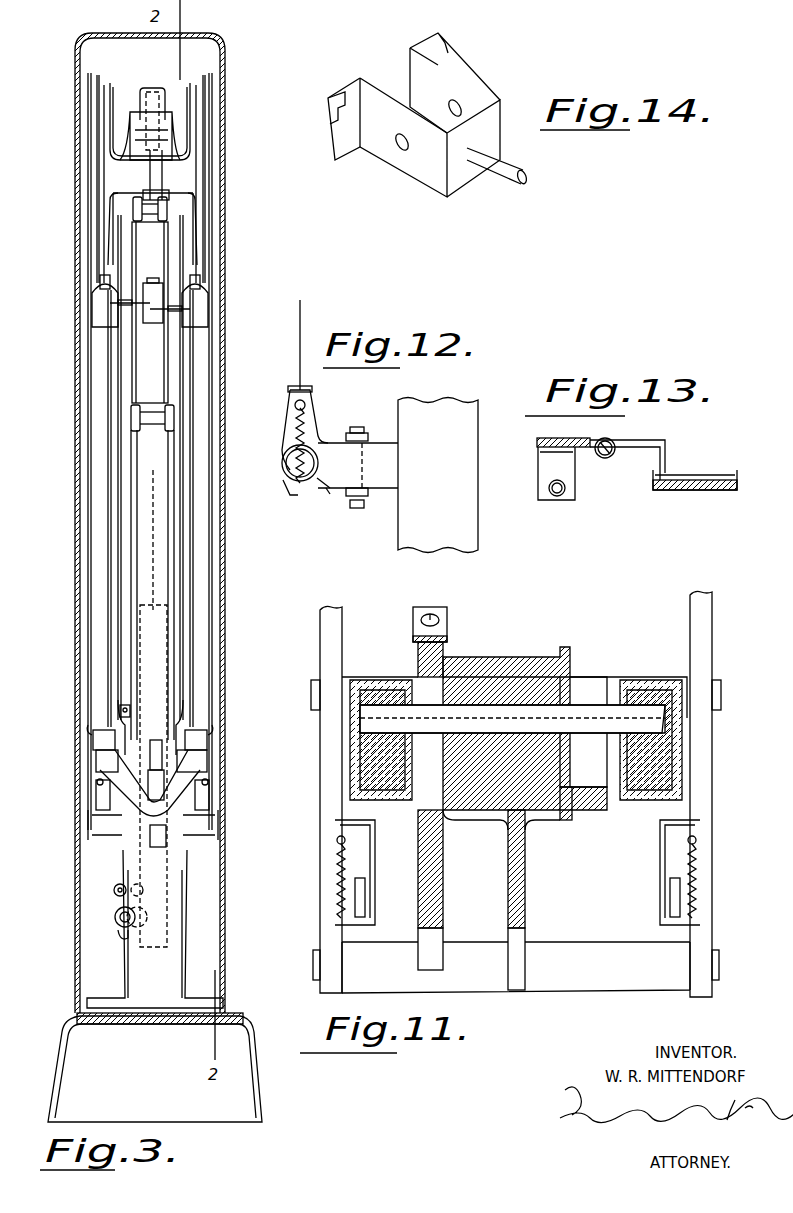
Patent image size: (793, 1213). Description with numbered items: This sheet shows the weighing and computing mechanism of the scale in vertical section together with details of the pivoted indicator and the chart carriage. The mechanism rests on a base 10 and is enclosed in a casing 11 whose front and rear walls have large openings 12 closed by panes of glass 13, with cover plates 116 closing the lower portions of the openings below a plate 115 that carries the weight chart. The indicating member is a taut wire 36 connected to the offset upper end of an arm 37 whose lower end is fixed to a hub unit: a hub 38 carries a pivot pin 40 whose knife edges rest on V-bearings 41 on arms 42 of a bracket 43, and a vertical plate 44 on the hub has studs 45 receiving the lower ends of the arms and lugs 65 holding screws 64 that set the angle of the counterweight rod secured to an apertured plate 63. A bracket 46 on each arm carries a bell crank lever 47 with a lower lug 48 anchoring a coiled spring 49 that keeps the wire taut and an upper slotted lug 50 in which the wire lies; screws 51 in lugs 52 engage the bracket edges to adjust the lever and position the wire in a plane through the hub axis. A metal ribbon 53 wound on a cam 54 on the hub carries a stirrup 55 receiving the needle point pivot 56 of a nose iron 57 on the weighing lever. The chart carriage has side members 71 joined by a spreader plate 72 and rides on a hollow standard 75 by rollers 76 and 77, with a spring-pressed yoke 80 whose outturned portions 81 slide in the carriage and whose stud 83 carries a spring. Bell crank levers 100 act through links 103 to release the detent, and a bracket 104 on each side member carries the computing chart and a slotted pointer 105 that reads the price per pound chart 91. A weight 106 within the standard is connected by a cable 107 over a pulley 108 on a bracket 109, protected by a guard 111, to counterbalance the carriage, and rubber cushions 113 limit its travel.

In FIG. 3, the base 10 is at (58, 1072).
In FIG. 3, the casing 11 is at (77, 870).
In FIG. 3, the openings 12 is at (80, 720).
In FIG. 3, the panes of glass 13 is at (80, 372).
In FIG. 12, the panes of glass 13 is at (294, 432).
In FIG. 12, the wire 36 is at (300, 322).
In FIG. 11, the wire 36 is at (342, 622).
In FIG. 3, the arm 37 is at (88, 80).
In FIG. 12, the arm 37 is at (438, 475).
In FIG. 13, the arm 37 is at (700, 490).
In FIG. 11, the arm 37 is at (320, 636).
In FIG. 3, the hub 38 is at (178, 748).
In FIG. 11, the hub 38 is at (573, 732).
In FIG. 3, the pivot pin 40 is at (207, 735).
In FIG. 11, the pivot pin 40 is at (490, 725).
In FIG. 11, the V-bearings 41 is at (516, 740).
In FIG. 3, the arms 42 is at (115, 770).
In FIG. 11, the arms 42 is at (516, 741).
In FIG. 3, the bracket 43 is at (187, 868).
In FIG. 11, the vertical plate 44 is at (525, 872).
In FIG. 3, the studs or bosses 45 is at (92, 827).
In FIG. 11, the studs or bosses 45 is at (582, 948).
In FIG. 12, the bracket 46 is at (358, 465).
In FIG. 13, the bracket 46 is at (652, 441).
In FIG. 11, the bracket 46 is at (352, 897).
In FIG. 3, the bell crank lever 47 is at (96, 792).
In FIG. 12, the bell crank lever 47 is at (327, 492).
In FIG. 13, the bell crank lever 47 is at (537, 440).
In FIG. 11, the bell crank lever 47 is at (375, 833).
In FIG. 12, the lug 48 is at (292, 495).
In FIG. 13, the lug 48 is at (538, 478).
In FIG. 11, the lug 48 is at (375, 922).
In FIG. 3, the coiled spring 49 is at (98, 785).
In FIG. 12, the coiled spring 49 is at (306, 425).
In FIG. 13, the coiled spring 49 is at (549, 494).
In FIG. 11, the coiled spring 49 is at (338, 856).
In FIG. 12, the lug 50 is at (290, 390).
In FIG. 12, the screws 51 is at (356, 508).
In FIG. 13, the screws 51 is at (612, 454).
In FIG. 12, the lugs 52 is at (365, 436).
In FIG. 13, the lugs 52 is at (602, 461).
In FIG. 3, the metal ribbon or tape 53 is at (128, 743).
In FIG. 11, the metal ribbon or tape 53 is at (447, 625).
In FIG. 11, the cam 54 is at (443, 652).
In FIG. 3, the stirrup 55 is at (120, 938).
In FIG. 3, the needle point pivot 56 is at (118, 928).
In FIG. 3, the nose iron 57 is at (118, 918).
In FIG. 11, the annular member or apertured plate 63 is at (572, 815).
In FIG. 3, the screws 64 is at (172, 790).
In FIG. 3, the lugs 65 is at (172, 772).
In FIG. 3, the side members 71 is at (164, 238).
In FIG. 3, the spreader plate 72 is at (150, 262).
In FIG. 3, the standard 75 is at (137, 475).
In FIG. 3, the roller 76 is at (193, 216).
In FIG. 3, the roller 77 is at (131, 418).
In FIG. 14, the yoke 80 is at (500, 105).
In FIG. 14, the outturned portions 81 is at (448, 53).
In FIG. 14, the stud 83 is at (527, 178).
In FIG. 3, the price per pound chart 91 is at (183, 478).
In FIG. 3, the bell crank levers 100 is at (150, 323).
In FIG. 3, the links 103 is at (118, 306).
In FIG. 3, the bracket 104 is at (200, 290).
In FIG. 3, the pointer or indicator 105 is at (92, 296).
In FIG. 3, the weight 106 is at (140, 617).
In FIG. 3, the cable 107 is at (150, 152).
In FIG. 3, the pulley 108 is at (130, 124).
In FIG. 3, the bracket 109 is at (168, 130).
In FIG. 3, the guard 111 is at (150, 88).
In FIG. 3, the rubber cushions 113 is at (167, 208).
In FIG. 3, the plate 115 is at (97, 210).
In FIG. 3, the cover plates 116 is at (193, 555).